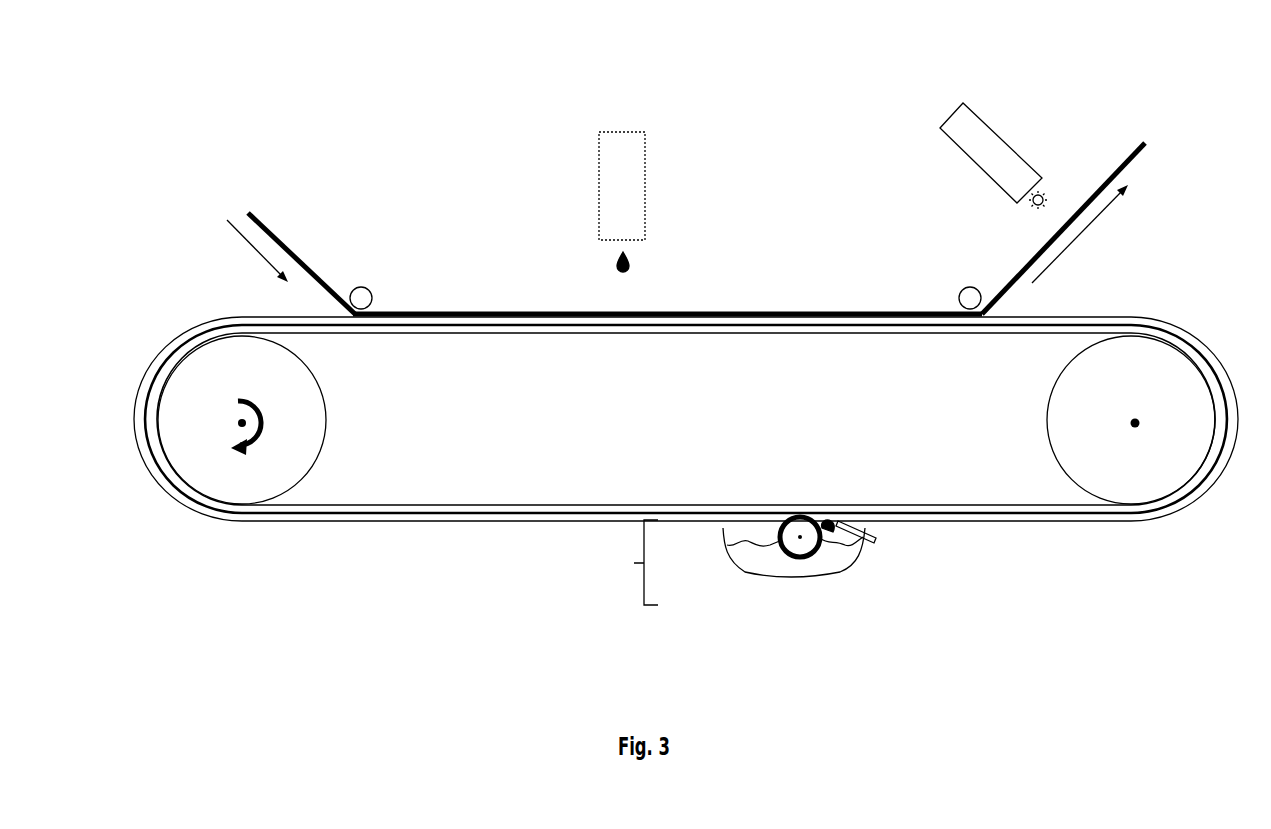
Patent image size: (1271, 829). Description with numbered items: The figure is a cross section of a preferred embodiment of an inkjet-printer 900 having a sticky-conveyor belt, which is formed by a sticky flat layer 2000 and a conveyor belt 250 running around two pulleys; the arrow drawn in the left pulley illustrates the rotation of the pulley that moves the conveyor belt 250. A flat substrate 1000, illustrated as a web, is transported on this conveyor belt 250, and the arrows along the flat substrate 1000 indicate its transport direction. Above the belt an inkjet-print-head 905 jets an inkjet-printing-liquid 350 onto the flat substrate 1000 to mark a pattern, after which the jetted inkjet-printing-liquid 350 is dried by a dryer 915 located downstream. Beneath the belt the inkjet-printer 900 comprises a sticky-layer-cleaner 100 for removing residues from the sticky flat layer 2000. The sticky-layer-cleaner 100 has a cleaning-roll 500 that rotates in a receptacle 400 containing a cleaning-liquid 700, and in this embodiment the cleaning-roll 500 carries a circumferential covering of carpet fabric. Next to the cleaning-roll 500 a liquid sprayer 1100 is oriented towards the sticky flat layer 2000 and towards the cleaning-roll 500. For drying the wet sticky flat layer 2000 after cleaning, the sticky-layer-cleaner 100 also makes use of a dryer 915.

The sticky-layer-cleaner 100 is at (625, 562).
The conveyor belt 250 is at (182, 502).
The sticky flat layer 2000 is at (293, 518).
The inkjet-printer 900 is at (303, 167).
The flat substrate 1000 is at (290, 248).
The inkjet-print-head 905 is at (621, 140).
The inkjet-printing-liquid 350 is at (627, 256).
The dryer 915 is at (957, 130).
The cleaning-roll 500 is at (803, 530).
The liquid sprayer 1100 is at (877, 537).
The receptacle 400 is at (863, 557).
The cleaning-liquid 700 is at (743, 560).